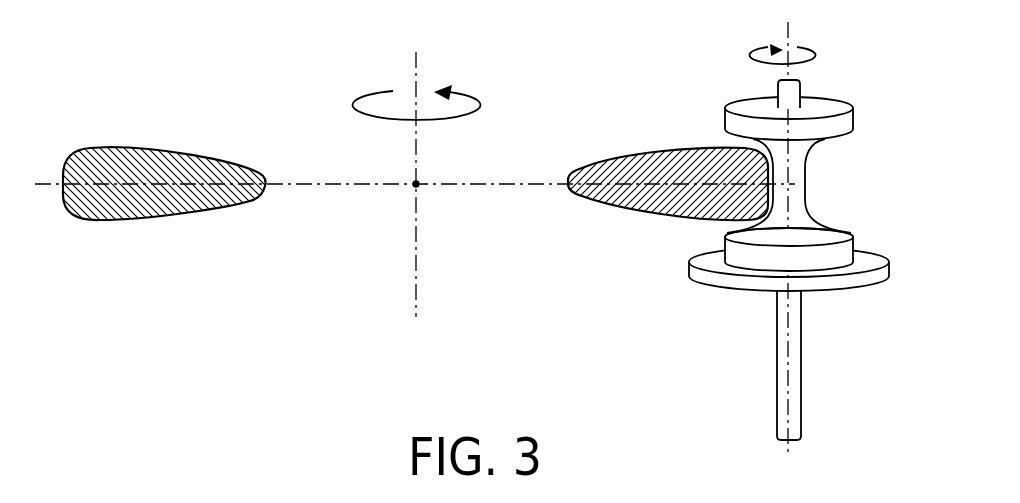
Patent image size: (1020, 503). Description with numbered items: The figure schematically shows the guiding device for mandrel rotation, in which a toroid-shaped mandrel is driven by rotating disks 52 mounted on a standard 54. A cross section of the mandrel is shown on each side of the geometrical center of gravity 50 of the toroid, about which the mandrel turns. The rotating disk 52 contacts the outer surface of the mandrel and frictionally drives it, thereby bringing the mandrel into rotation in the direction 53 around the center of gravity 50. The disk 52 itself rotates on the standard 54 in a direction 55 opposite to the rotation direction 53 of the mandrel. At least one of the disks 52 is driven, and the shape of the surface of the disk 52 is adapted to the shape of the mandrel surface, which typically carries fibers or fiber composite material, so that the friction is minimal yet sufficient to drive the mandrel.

The geometrical center of gravity 50 is at (418, 182).
The rotating disk 52 is at (724, 79).
The rotation direction of the mandrel 53 is at (474, 104).
The standard 54 is at (802, 368).
The rotation direction of the disks 55 is at (820, 57).